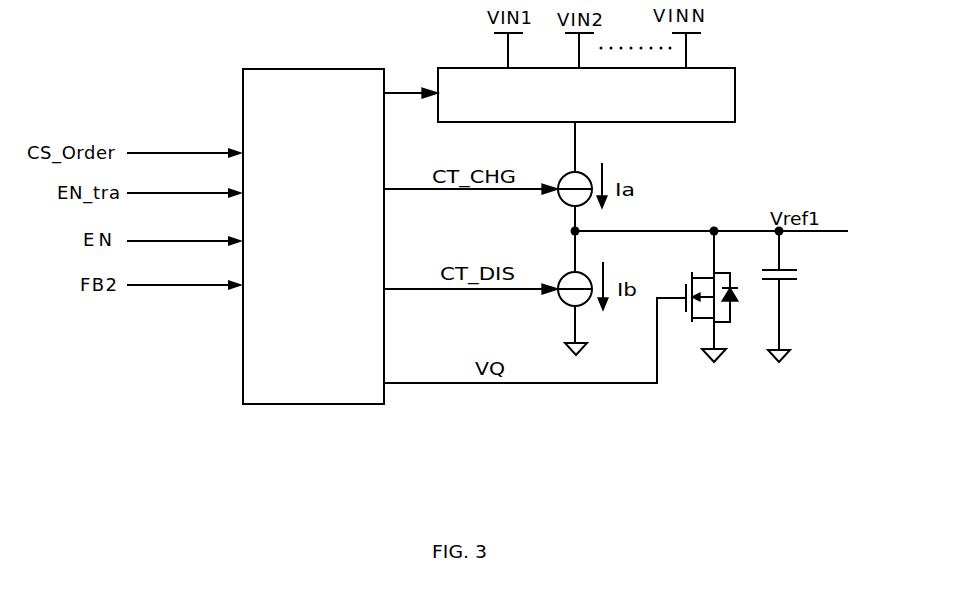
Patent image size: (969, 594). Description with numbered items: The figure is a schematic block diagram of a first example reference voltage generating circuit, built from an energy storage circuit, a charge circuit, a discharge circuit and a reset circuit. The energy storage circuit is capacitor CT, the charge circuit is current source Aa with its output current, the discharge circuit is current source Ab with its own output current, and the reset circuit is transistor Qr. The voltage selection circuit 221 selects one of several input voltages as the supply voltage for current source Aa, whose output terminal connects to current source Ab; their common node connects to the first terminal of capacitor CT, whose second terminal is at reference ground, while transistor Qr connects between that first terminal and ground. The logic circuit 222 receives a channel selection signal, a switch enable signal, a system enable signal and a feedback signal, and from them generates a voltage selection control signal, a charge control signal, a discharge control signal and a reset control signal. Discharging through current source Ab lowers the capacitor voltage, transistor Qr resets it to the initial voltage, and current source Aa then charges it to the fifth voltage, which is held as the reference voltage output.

The voltage selection circuit 221 is at (603, 117).
The logic circuit 222 is at (333, 280).
The current source Aa is at (570, 179).
The current source Ab is at (569, 279).
The transistor Qr is at (704, 296).
The capacitor CT is at (799, 296).